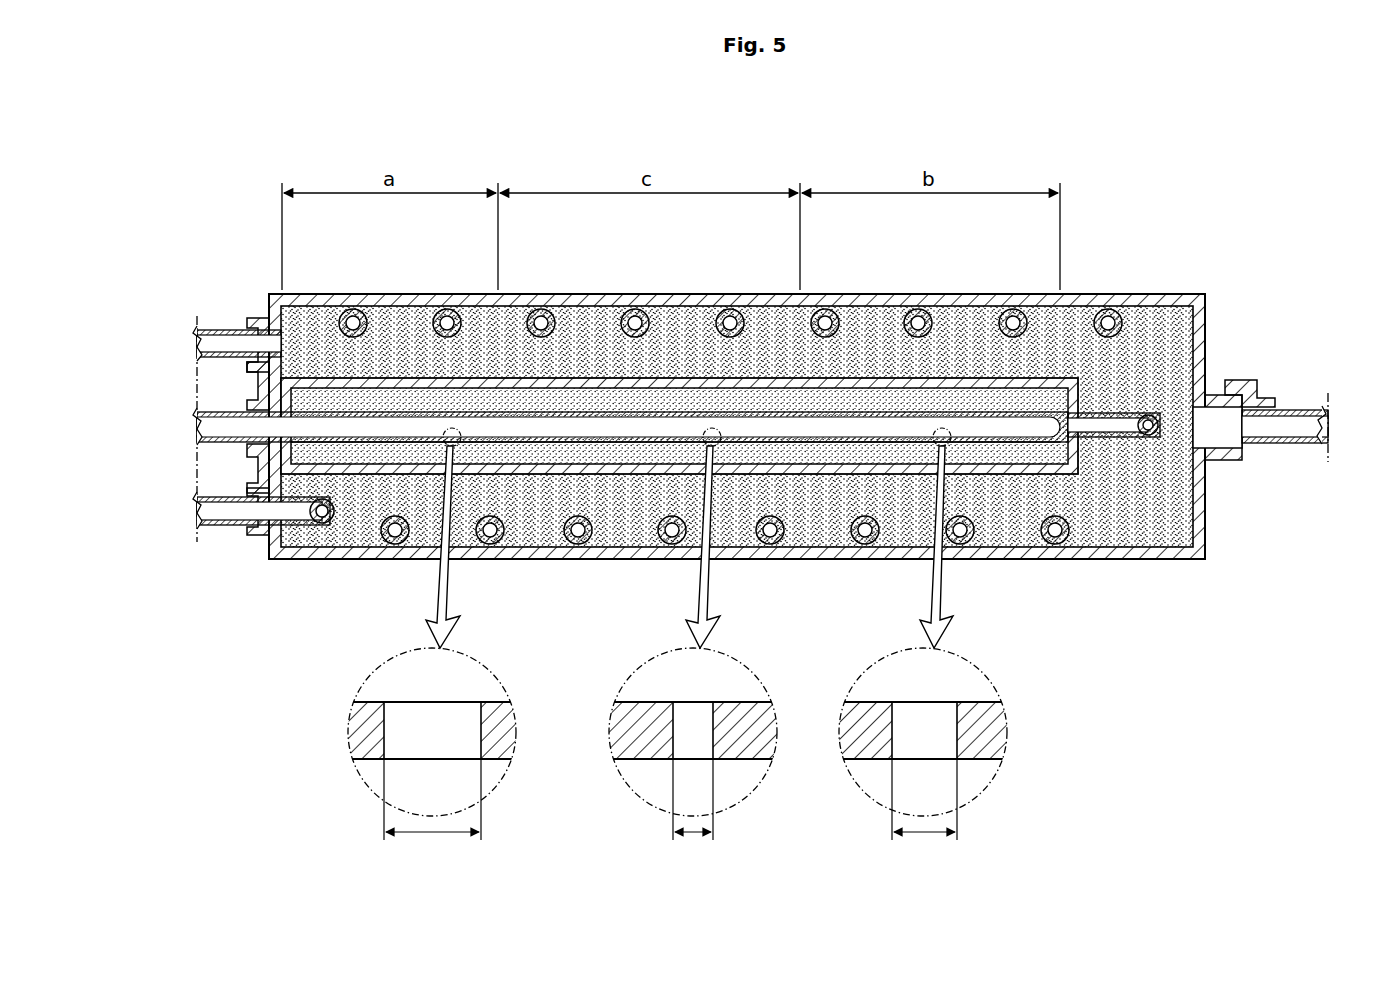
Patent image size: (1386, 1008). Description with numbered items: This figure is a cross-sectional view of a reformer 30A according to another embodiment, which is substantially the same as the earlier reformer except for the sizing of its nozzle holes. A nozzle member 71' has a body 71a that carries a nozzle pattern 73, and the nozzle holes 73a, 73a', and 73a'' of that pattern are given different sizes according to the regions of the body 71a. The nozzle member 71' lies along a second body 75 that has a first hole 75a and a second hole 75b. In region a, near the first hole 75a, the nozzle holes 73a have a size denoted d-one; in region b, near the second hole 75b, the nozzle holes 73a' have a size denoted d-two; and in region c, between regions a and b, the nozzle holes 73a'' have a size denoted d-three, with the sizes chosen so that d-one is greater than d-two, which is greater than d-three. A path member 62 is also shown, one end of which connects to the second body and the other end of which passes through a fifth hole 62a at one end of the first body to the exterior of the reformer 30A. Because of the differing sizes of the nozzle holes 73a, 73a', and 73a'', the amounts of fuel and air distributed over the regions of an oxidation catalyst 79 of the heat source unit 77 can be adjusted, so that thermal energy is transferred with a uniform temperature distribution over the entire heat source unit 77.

The reformer 30A is at (786, 128).
The body of nozzle member 71a is at (247, 408).
The first hole 75a is at (247, 466).
The path member 62 is at (213, 528).
The fifth hole 62a is at (258, 537).
The nozzle member 71' is at (679, 492).
The heat source unit 77 is at (550, 462).
The oxidation catalyst 79 is at (630, 447).
The second body 75 is at (708, 448).
The second hole 75b is at (1092, 452).
The nozzle pattern 73 is at (950, 860).
The nozzle holes 73a is at (434, 739).
The nozzle holes 73a'' is at (696, 739).
The nozzle holes 73a' is at (928, 739).